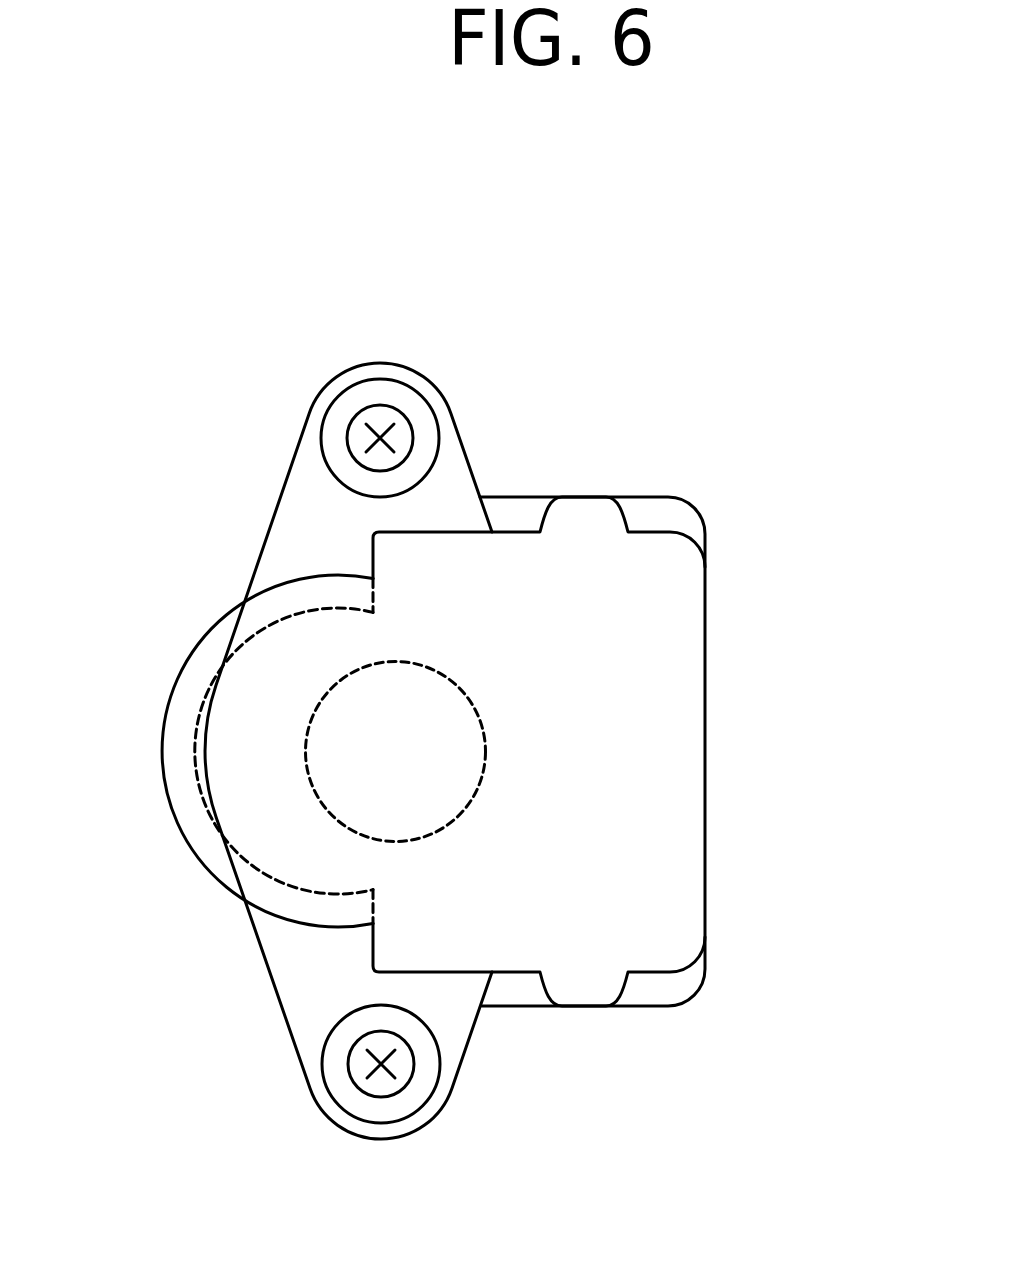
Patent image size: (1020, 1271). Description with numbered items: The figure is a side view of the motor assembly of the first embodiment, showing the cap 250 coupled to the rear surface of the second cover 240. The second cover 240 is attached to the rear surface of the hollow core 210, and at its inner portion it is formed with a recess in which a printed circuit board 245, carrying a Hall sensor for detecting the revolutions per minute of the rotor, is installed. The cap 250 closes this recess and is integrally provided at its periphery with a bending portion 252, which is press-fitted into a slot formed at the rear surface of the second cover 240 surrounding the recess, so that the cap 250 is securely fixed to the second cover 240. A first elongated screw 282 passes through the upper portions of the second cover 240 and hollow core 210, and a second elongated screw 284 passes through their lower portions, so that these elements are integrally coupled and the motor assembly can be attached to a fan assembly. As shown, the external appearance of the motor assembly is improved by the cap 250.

The hollow core 210 is at (703, 517).
The second cover 240 is at (447, 483).
The printed circuit board 245 is at (368, 761).
The cap 250 is at (232, 733).
The bending portion 252 is at (313, 858).
The first elongated screw 282 is at (403, 437).
The second elongated screw 284 is at (402, 1062).